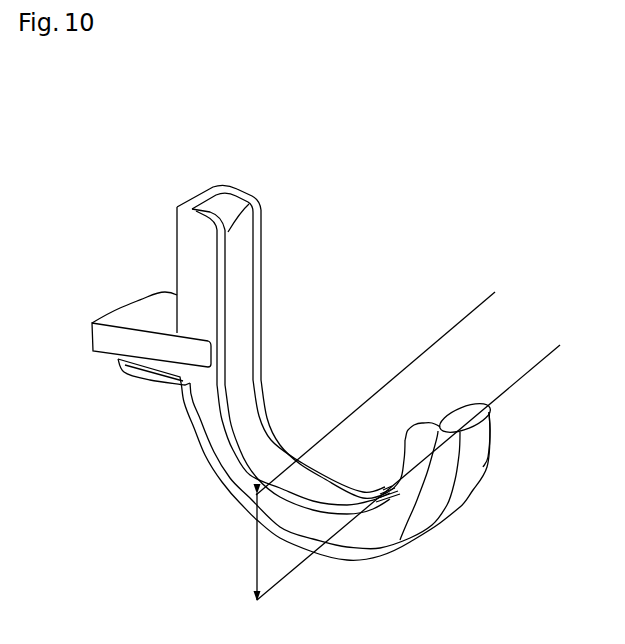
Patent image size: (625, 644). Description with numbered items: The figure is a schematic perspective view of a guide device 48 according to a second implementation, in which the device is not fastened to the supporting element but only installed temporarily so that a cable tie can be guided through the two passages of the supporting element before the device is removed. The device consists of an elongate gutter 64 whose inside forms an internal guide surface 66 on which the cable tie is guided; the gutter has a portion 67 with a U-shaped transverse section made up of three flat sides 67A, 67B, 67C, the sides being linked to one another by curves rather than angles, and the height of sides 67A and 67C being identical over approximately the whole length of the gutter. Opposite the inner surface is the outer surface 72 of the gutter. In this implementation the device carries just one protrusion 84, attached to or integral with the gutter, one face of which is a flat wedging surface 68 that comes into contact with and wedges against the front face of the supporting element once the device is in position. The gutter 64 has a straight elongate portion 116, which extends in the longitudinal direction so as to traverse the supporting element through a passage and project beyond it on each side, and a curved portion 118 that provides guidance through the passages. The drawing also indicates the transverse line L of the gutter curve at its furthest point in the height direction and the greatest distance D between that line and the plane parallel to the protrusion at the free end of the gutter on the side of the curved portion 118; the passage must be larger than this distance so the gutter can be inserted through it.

The guide device 48 is at (447, 279).
The elongate gutter 64 is at (252, 196).
The internal guide surface 66 is at (256, 438).
The portion 67 is at (240, 284).
The side 67A is at (296, 458).
The side 67B is at (205, 210).
The side 67C is at (210, 443).
The wedging surface 68 is at (118, 359).
The outer surface 72 is at (472, 462).
The protrusion 84 is at (145, 312).
The straight elongate portion 116 is at (195, 272).
The curved portion 118 is at (375, 533).
The greatest distance D is at (245, 546).
The transverse line L is at (408, 475).